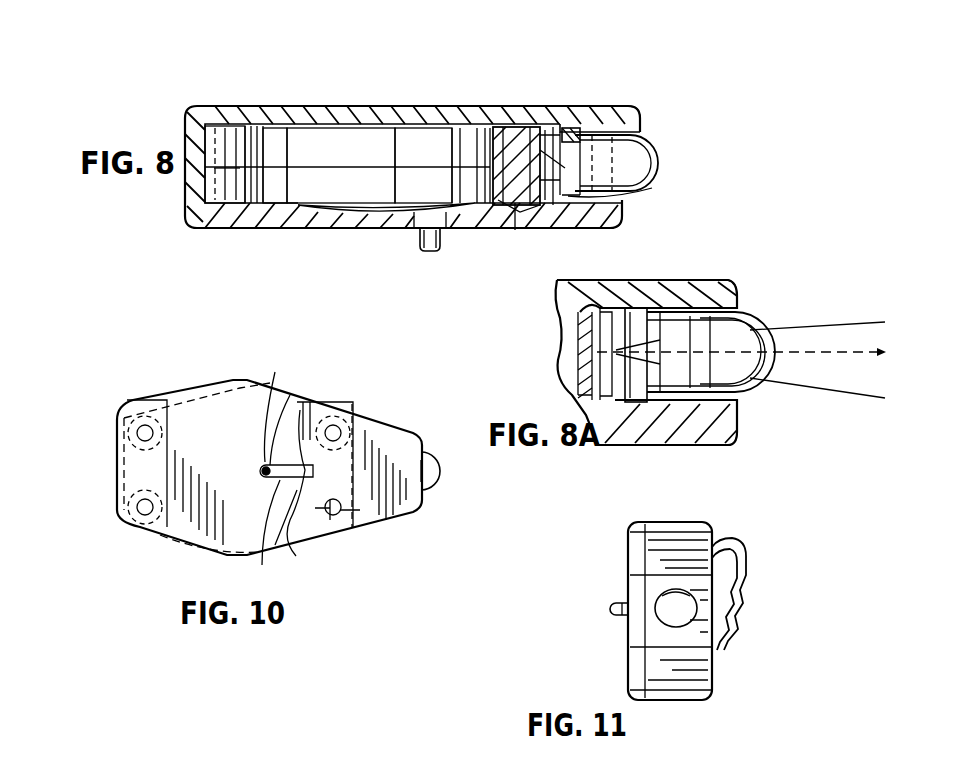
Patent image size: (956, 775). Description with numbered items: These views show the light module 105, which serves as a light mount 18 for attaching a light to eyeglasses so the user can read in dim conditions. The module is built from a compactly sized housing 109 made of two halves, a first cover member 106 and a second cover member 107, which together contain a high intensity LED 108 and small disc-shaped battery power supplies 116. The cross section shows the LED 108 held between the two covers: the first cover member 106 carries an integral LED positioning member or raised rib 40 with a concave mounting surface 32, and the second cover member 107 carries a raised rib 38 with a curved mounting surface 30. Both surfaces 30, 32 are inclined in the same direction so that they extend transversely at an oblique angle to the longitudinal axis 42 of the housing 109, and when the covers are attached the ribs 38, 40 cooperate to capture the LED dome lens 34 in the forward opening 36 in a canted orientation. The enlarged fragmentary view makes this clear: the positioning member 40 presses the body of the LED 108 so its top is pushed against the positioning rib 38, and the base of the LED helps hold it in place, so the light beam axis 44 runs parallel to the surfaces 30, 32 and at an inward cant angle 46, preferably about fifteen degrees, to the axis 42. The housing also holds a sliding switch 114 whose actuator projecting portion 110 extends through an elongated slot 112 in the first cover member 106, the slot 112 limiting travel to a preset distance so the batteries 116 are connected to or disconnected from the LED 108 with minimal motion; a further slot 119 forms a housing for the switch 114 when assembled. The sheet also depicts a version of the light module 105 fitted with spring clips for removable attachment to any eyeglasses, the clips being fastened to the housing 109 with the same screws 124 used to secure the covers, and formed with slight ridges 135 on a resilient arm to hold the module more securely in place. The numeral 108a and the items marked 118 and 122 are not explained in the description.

In FIG. 8A, the light mount 18 is at (746, 298).
In FIG. 8, the mounting surface 30 is at (648, 134).
In FIG. 8, the mounting surface 32 is at (663, 181).
In FIG. 8A, the LED dome lens 34 is at (754, 324).
In FIG. 8A, the forward opening 36 is at (744, 293).
In FIG. 8, the raised rib 38 is at (628, 118).
In FIG. 8, the raised rib 40 is at (622, 214).
In FIG. 8A, the raised rib 40 is at (734, 432).
In FIG. 8A, the longitudinal axis 42 is at (876, 388).
In FIG. 8A, the light beam axis 44 is at (842, 320).
In FIG. 8A, the inward cant angle 46 is at (860, 356).
In FIG. 8, the light module 105 is at (213, 240).
In FIG. 10, the light module 105 is at (190, 378).
In FIG. 11, the light module 105 is at (725, 697).
In FIG. 8A, the first cover member 106 is at (626, 452).
In FIG. 8A, the second cover member 107 is at (612, 302).
In FIG. 10, the second cover member 107 is at (229, 447).
In FIG. 8, the LED 108 is at (652, 152).
In FIG. 8A, the LED 108 is at (756, 396).
In FIG. 10, the LED 108 is at (437, 473).
In FIG. 11, the LED 108 is at (650, 640).
In FIG. 8, the bulb holder 108a is at (575, 140).
In FIG. 8A, the bulb holder 108a is at (688, 284).
In FIG. 11, the housing 109 is at (712, 518).
In FIG. 8, the actuator projecting portion 110 is at (431, 252).
In FIG. 10, the actuator projecting portion 110 is at (268, 462).
In FIG. 11, the actuator projecting portion 110 is at (612, 607).
In FIG. 8, the elongated slot 112 is at (396, 238).
In FIG. 10, the elongated slot 112 is at (290, 482).
In FIG. 8, the switch 114 is at (516, 234).
In FIG. 8, the battery power supply 116 is at (335, 150).
In FIG. 8, the end cap 118 is at (534, 137).
In FIG. 8, the slot 119 is at (546, 232).
In FIG. 10, the mounting portion 122 is at (342, 536).
In FIG. 8, the screw 124 is at (225, 108).
In FIG. 10, the ridge 135 is at (368, 438).